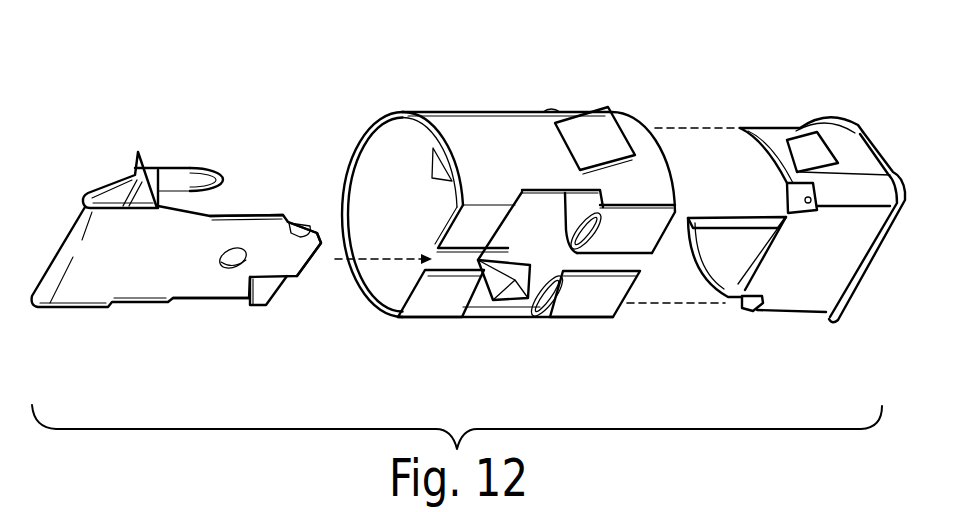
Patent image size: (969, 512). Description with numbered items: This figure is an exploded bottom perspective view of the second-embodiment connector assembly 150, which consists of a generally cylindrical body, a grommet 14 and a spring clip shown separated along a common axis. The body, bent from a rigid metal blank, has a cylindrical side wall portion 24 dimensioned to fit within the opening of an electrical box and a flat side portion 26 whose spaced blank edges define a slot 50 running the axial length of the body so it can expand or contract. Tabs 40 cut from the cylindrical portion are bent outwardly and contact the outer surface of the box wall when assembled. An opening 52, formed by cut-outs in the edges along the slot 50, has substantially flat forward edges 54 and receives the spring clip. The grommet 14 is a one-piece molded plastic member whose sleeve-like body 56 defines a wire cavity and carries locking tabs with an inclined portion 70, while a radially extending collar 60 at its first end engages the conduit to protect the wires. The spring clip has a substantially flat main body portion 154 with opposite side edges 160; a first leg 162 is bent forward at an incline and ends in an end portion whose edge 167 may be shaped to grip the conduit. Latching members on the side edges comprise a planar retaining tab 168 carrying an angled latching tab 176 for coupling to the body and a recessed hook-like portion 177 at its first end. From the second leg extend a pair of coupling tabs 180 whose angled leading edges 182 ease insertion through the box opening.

The grommet 14 is at (796, 241).
The cylindrical side wall portion 24 is at (647, 170).
The flat side portion 26 is at (637, 313).
The tab 40 is at (603, 120).
The slot 50 is at (634, 261).
The opening 52 is at (536, 203).
The forward edge 54 is at (527, 226).
The body of grommet 56 is at (775, 298).
The collar 60 is at (903, 190).
The inclined portion 70 is at (805, 145).
The connector assembly 150 is at (338, 106).
The main body portion 154 is at (147, 283).
The side edge 160 is at (247, 213).
The first leg 162 is at (92, 194).
The edge of the end portion 167 is at (130, 168).
The retaining tab 168 is at (136, 155).
The latching tab 176 is at (160, 170).
The hook-like portion 177 is at (213, 172).
The coupling tab 180 is at (296, 223).
The leading edge 182 is at (318, 228).